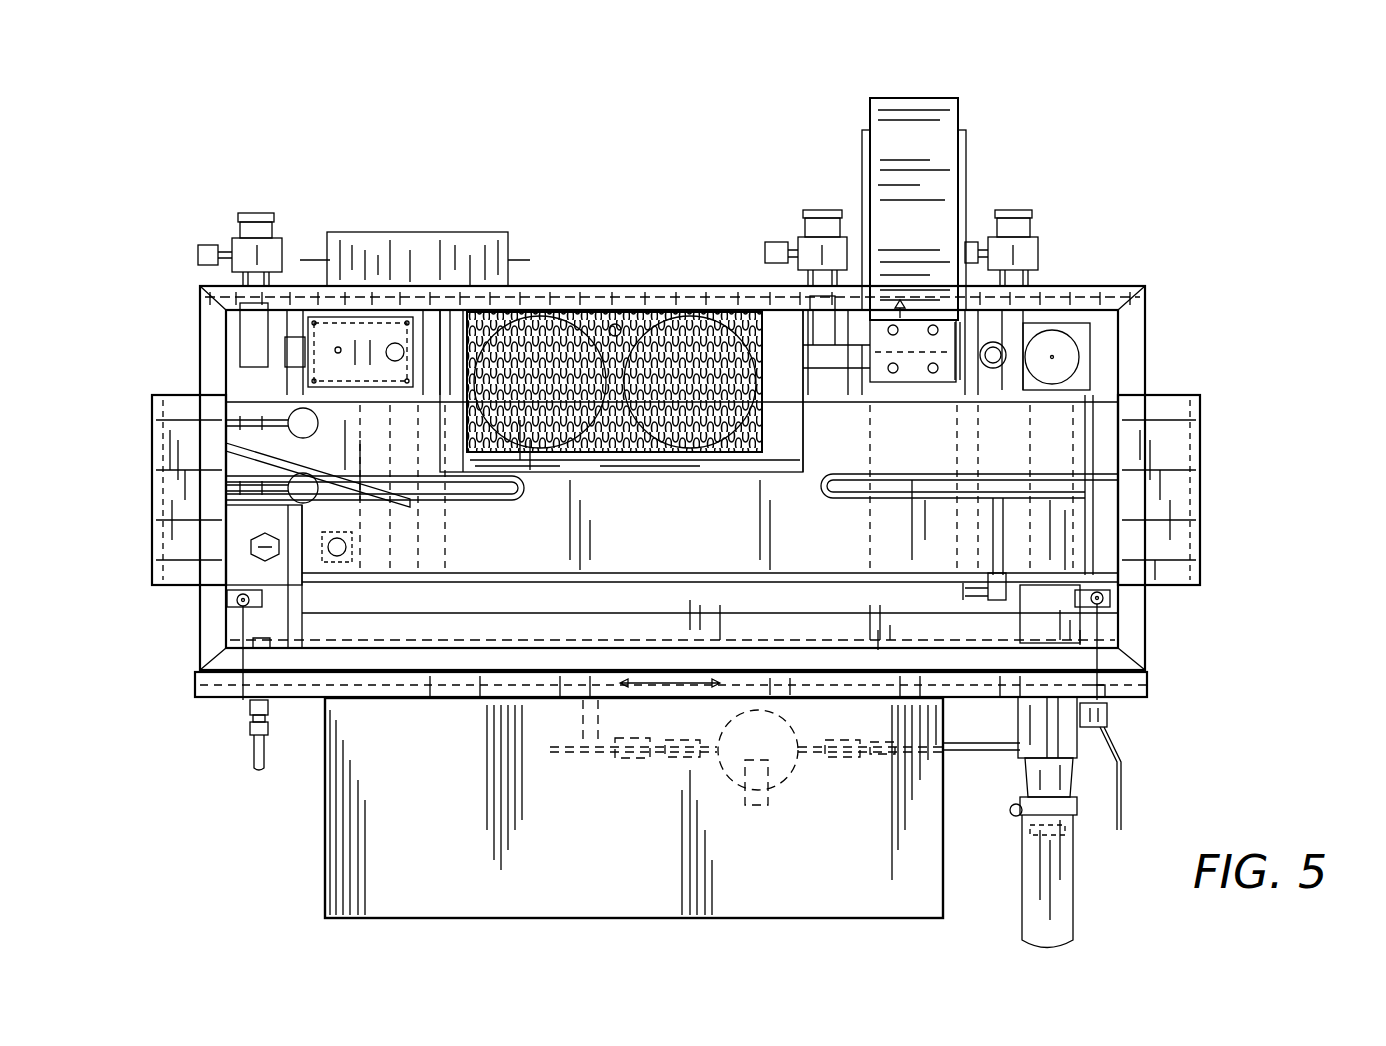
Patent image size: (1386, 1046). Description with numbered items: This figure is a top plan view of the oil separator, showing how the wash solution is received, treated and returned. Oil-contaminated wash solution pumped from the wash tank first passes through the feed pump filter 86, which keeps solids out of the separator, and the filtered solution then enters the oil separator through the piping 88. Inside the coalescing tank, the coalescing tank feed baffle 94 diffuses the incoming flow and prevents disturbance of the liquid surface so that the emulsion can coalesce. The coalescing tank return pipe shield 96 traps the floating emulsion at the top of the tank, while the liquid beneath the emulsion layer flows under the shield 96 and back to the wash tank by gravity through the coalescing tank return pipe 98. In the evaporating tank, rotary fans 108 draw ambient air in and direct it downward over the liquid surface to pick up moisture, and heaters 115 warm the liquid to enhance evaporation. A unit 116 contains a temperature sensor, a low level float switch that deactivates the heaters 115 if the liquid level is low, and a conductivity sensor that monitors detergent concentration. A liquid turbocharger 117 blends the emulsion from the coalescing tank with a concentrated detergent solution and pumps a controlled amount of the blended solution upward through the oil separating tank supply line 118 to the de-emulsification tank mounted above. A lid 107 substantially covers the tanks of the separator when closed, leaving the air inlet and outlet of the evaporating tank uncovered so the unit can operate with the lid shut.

The feed pump filter 86 is at (798, 774).
The piping 88 is at (980, 750).
The coalescing tank feed baffle 94 is at (1080, 612).
The coalescing tank return pipe shield 96 is at (1090, 327).
The coalescing tank return pipe 98 is at (1055, 905).
The lid 107 is at (363, 833).
The rotary fans 108 is at (612, 328).
The heaters 115 is at (480, 563).
The unit 116 is at (300, 322).
The liquid turbocharger 117 is at (966, 162).
The oil separating tank supply line 118 is at (998, 532).